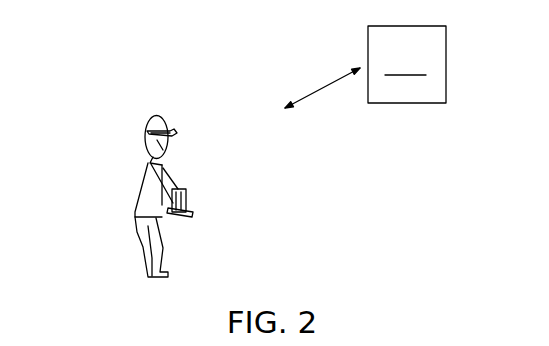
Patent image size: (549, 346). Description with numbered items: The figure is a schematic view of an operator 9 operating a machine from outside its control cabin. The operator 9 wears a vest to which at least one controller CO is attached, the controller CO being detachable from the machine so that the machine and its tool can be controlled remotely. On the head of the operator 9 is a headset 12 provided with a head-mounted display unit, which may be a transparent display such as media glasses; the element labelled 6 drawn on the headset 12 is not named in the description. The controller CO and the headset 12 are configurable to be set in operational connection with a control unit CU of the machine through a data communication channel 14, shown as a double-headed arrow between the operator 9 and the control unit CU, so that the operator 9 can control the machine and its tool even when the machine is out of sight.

The operator 9 is at (114, 127).
The headset 12 is at (150, 117).
The glasses / display 6 is at (176, 133).
The controller CO is at (177, 192).
The data communication channel 14 is at (317, 91).
The control unit CU is at (407, 64).